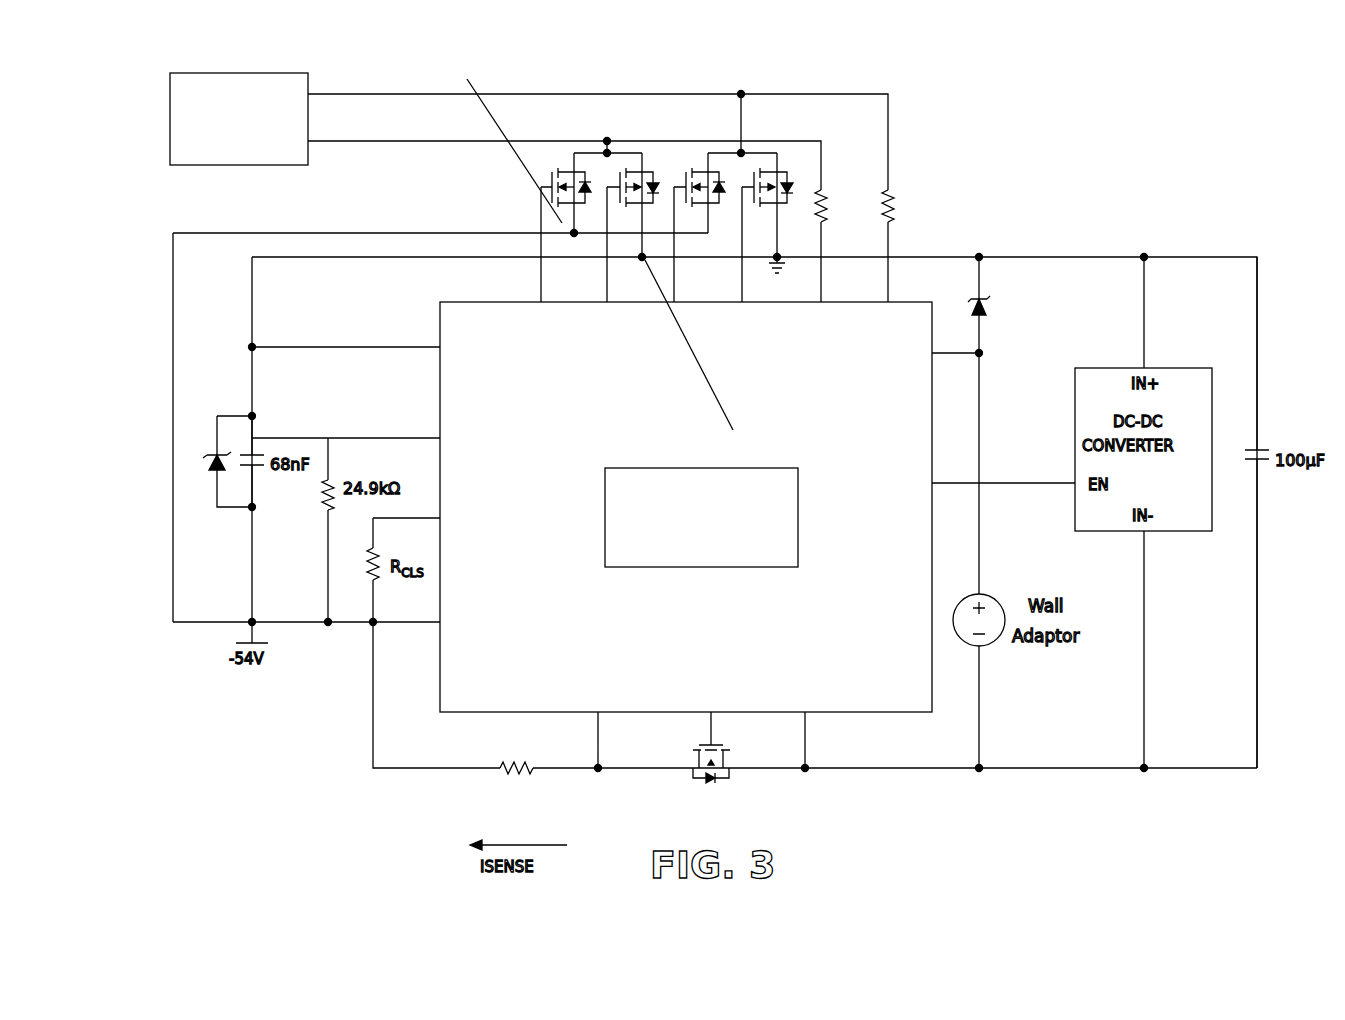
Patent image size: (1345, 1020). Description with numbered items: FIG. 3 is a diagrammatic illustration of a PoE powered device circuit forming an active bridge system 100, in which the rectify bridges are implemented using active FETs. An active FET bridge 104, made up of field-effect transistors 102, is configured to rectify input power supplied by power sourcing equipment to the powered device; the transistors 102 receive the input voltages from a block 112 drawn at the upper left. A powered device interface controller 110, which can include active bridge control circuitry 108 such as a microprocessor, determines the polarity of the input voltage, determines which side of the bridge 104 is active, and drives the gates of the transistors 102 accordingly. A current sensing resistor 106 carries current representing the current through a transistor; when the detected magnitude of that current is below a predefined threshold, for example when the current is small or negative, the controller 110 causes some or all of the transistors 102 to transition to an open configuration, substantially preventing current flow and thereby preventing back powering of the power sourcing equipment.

The active bridge system 100 is at (1042, 103).
The field-effect transistor 102 is at (528, 186).
The active field-effect transistor bridge 104 is at (683, 152).
The current sensing resistor 106 is at (495, 774).
The active bridge control circuitry 108 is at (708, 519).
The powered device interface controller 110 is at (500, 337).
The power source block 112 is at (252, 73).